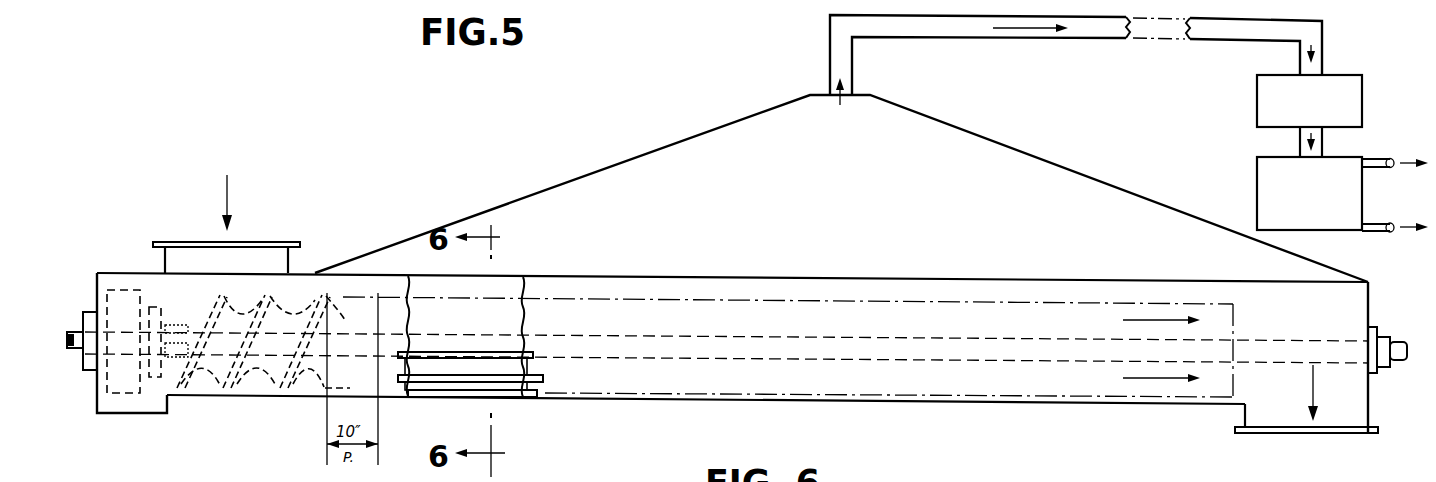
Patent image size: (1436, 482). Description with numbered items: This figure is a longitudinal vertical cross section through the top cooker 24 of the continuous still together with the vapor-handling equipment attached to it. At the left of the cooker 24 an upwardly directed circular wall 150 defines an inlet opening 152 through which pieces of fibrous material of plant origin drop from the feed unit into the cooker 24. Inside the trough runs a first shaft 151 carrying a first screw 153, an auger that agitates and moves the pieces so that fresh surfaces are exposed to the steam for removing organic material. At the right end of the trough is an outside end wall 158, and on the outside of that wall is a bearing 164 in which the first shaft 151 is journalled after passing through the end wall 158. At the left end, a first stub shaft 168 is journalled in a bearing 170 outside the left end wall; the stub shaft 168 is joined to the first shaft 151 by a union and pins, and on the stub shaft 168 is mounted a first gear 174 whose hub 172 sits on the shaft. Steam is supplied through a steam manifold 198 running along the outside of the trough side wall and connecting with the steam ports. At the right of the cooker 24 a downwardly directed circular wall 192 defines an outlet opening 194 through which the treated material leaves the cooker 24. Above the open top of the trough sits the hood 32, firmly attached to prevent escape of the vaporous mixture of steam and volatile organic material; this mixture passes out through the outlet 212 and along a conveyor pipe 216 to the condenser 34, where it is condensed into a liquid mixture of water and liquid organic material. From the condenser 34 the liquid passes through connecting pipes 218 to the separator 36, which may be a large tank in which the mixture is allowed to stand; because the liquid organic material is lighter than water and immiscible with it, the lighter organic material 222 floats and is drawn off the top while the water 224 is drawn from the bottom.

The top cooker 24 is at (765, 274).
The hood 32 is at (922, 158).
The condenser 34 is at (1325, 111).
The separator 36 is at (1325, 198).
The upwardly directed circular wall 150 is at (292, 262).
The first shaft 151 is at (737, 345).
The inlet opening 152 is at (233, 243).
The first screw 153 is at (247, 265).
The outside end wall 158 is at (1366, 297).
The bearing 164 is at (1372, 366).
The first stub shaft 168 is at (68, 327).
The bearing 170 is at (92, 312).
The hub of the first gear 172 is at (155, 400).
The first gear 174 is at (125, 382).
The downwardly directed circular wall 192 is at (1415, 406).
The outlet opening 194 is at (1302, 426).
The steam manifold 198 is at (528, 378).
The outlet 212 is at (838, 96).
The conveyor pipe 216 is at (975, 28).
The connecting pipes 218 is at (1298, 138).
The lighter organic material 222 is at (1412, 150).
The water 224 is at (1391, 229).